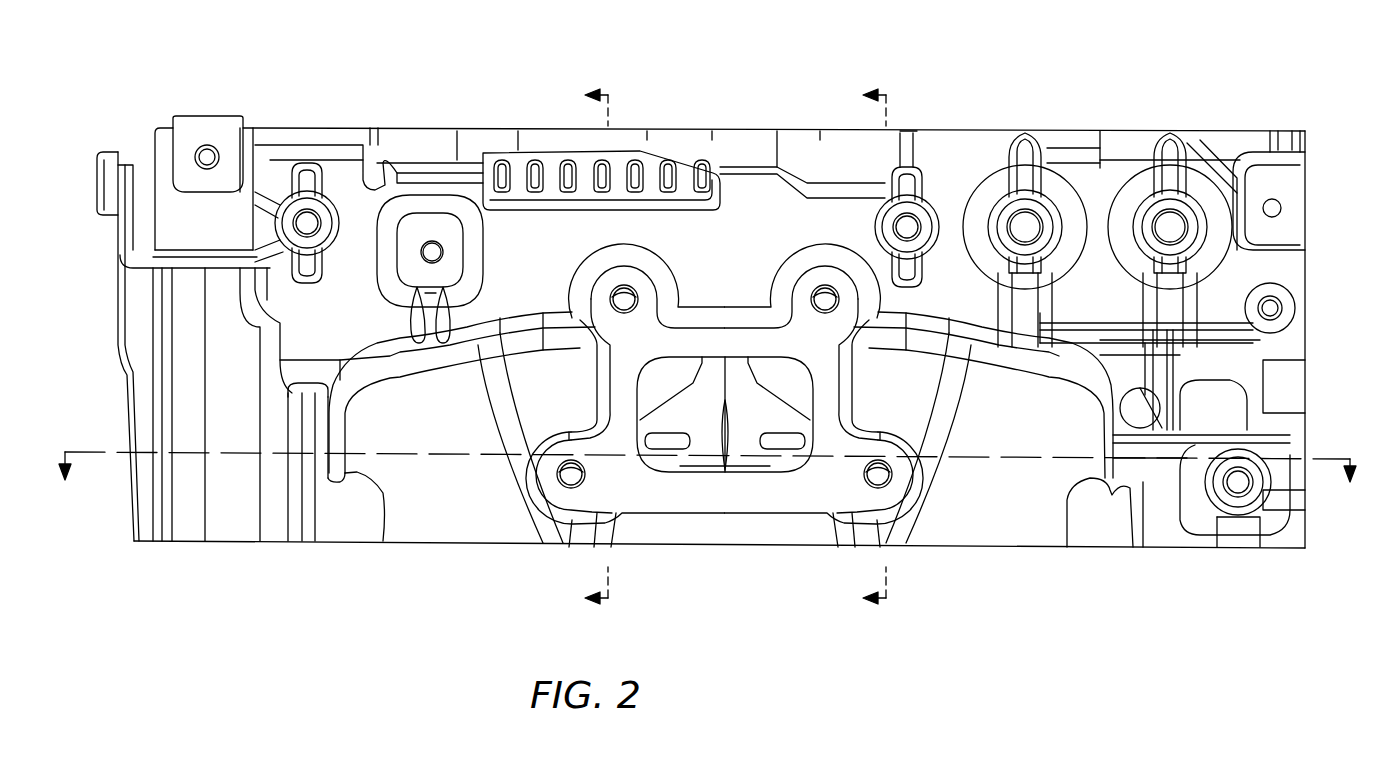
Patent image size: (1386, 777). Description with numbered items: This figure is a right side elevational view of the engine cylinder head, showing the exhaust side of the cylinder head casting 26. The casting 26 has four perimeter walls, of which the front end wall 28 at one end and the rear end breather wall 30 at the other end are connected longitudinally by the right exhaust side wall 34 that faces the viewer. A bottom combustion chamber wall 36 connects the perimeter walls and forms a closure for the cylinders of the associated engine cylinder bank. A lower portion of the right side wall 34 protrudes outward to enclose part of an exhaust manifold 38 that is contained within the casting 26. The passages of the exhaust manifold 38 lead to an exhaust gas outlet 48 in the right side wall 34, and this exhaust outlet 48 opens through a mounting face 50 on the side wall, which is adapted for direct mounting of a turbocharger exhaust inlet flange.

The cylinder head casting 26 is at (1102, 108).
The front end wall 28 is at (1305, 275).
The rear end (breather) wall 30 is at (112, 258).
The right (exhaust) side wall 34 is at (820, 160).
The bottom (combustion chamber) wall 36 is at (482, 545).
The exhaust manifold 38 is at (740, 445).
The exhaust gas outlet 48 is at (697, 448).
The mounting face 50 is at (810, 477).